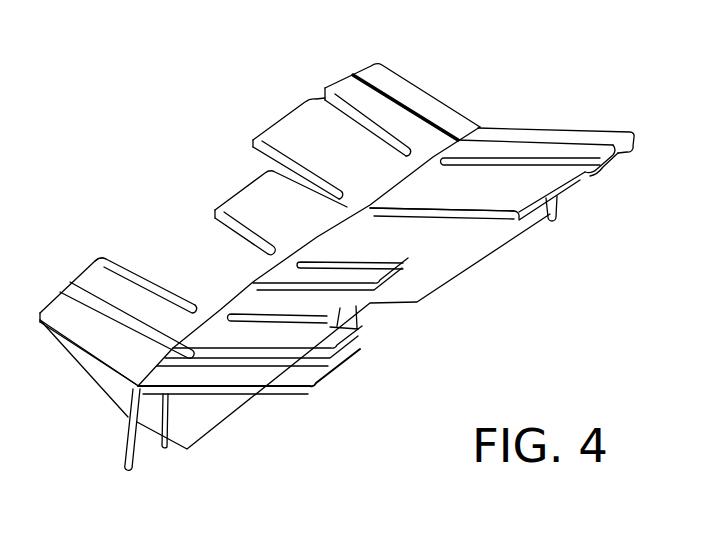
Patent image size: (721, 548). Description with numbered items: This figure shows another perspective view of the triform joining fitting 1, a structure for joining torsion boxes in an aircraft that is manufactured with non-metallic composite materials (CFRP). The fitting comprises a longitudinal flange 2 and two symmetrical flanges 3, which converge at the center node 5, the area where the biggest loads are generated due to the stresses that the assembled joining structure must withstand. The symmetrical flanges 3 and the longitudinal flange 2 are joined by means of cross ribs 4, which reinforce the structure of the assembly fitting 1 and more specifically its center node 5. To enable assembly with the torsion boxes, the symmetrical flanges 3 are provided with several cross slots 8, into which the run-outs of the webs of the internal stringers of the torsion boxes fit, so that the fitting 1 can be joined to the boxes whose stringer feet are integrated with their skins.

The triform joining fitting 1 is at (232, 116).
The longitudinal flange 2 is at (125, 455).
The symmetrical flanges 3 is at (432, 108).
The cross ribs 4 is at (115, 388).
The center node 5 is at (90, 268).
The cross slots 8 is at (238, 312).